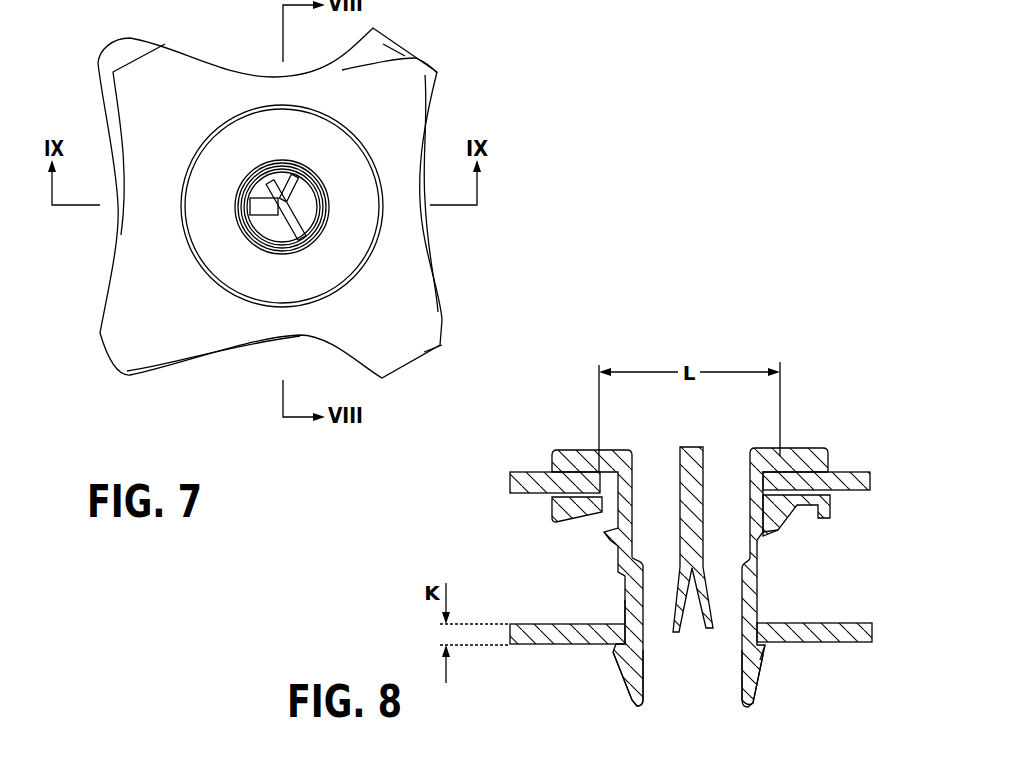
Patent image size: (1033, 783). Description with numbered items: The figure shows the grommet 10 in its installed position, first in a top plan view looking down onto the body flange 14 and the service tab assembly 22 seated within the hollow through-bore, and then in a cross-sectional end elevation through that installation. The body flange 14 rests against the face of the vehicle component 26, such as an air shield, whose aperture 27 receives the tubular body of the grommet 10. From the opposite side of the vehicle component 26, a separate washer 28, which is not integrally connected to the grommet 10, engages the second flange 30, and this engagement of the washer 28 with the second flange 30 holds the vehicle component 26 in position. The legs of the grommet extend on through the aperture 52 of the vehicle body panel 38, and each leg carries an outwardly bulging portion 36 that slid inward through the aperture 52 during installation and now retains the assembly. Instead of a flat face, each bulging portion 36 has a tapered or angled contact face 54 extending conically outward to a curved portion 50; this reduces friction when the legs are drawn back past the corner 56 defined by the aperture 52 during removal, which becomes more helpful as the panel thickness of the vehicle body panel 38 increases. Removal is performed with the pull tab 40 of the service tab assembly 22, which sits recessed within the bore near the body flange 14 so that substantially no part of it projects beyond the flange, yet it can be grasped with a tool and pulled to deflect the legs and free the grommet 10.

In FIG. 8, the grommet 10 is at (797, 410).
In FIG. 7, the body flange 14 is at (223, 266).
In FIG. 8, the body flange 14 is at (567, 453).
In FIG. 7, the service tab assembly 22 is at (312, 192).
In FIG. 7, the vehicle component 26 is at (128, 332).
In FIG. 8, the vehicle component 26 is at (528, 475).
In FIG. 8, the aperture 27 is at (772, 482).
In FIG. 8, the washer 28 is at (783, 530).
In FIG. 8, the second flange 30 is at (772, 534).
In FIG. 8, the bulging portion 36 is at (753, 673).
In FIG. 7, the vehicle body panel 38 is at (383, 44).
In FIG. 8, the vehicle body panel 38 is at (557, 628).
In FIG. 8, the pull tab 40 is at (678, 528).
In FIG. 8, the curved portion 50 is at (615, 650).
In FIG. 8, the aperture 52 is at (767, 620).
In FIG. 8, the angled contact face 54 is at (622, 621).
In FIG. 8, the corner 56 is at (770, 645).